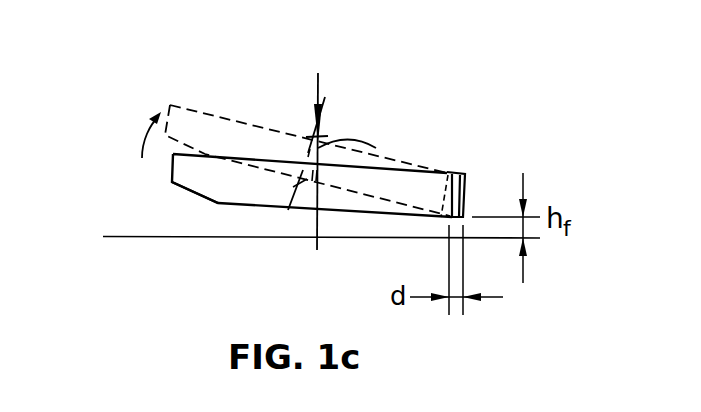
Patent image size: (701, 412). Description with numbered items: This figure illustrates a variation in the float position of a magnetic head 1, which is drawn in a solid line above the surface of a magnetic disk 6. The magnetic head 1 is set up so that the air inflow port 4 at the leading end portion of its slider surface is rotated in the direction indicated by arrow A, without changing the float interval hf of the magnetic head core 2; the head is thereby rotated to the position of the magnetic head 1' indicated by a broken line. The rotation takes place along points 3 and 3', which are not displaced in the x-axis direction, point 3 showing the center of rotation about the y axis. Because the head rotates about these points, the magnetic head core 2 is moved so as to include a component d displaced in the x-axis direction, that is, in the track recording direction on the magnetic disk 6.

The magnetic head 1 is at (312, 141).
The magnetic head 1' is at (307, 128).
The magnetic head core 2 is at (467, 190).
The point 3 is at (345, 153).
The point 3' is at (346, 156).
The air inflow port 4 is at (218, 203).
The magnetic disk 6 is at (131, 237).
The arrow A is at (138, 135).